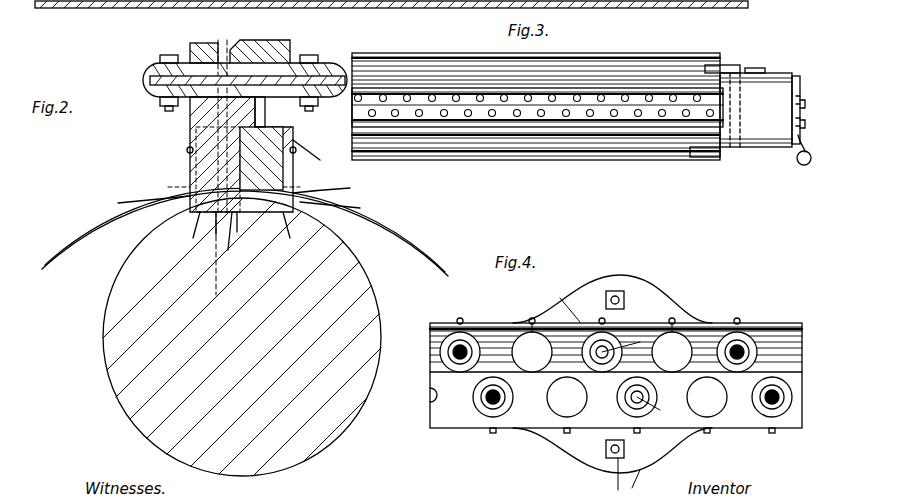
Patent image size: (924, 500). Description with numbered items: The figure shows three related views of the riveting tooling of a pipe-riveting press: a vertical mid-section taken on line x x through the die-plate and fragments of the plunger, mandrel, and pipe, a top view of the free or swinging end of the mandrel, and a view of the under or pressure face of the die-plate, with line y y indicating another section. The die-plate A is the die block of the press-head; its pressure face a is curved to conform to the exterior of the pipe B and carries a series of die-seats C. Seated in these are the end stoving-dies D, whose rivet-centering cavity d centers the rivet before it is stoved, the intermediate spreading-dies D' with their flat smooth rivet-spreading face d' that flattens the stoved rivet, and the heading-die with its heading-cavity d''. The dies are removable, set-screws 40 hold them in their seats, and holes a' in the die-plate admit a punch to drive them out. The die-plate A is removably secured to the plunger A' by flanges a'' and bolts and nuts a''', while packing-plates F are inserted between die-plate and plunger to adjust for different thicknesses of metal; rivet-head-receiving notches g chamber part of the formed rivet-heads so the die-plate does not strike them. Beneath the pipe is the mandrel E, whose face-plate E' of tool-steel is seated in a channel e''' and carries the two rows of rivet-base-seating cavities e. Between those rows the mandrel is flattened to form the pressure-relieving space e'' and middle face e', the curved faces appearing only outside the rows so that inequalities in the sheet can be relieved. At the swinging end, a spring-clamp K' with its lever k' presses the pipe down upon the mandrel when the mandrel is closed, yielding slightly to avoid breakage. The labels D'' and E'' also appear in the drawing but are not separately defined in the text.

In FIG. 2, the die-plate A is at (214, 155).
In FIG. 4, the die-plate A is at (603, 394).
In FIG. 2, the plunger A' is at (238, 42).
In FIG. 2, the pressure face a is at (218, 169).
In FIG. 4, the pressure face a is at (457, 442).
In FIG. 2, the holes a' is at (231, 144).
In FIG. 2, the flanges a'' is at (235, 106).
In FIG. 4, the flanges a'' is at (600, 377).
In FIG. 2, the bolts and nuts a''' is at (222, 79).
In FIG. 4, the bolts and nuts a''' is at (629, 356).
In FIG. 2, the pipe B is at (85, 238).
In FIG. 2, the die-seats C is at (314, 153).
In FIG. 2, the stoving-dies D is at (211, 157).
In FIG. 4, the stoving-dies D is at (596, 381).
In FIG. 4, the spreading-dies D' is at (611, 372).
In FIG. 4, the connecting bar D'' is at (604, 391).
In FIG. 2, the rivet-centering cavity d is at (231, 187).
In FIG. 4, the rivet-centering cavity d is at (595, 377).
In FIG. 4, the rivet-spreading face d' is at (619, 374).
In FIG. 4, the heading-cavity d'' is at (639, 379).
In FIG. 2, the mandrel E is at (242, 337).
In FIG. 3, the face-plate E' is at (536, 124).
In FIG. 2, the face-plate E' is at (99, 245).
In FIG. 3, the roll journal E'' is at (764, 119).
In FIG. 3, the rivet-base-seating cavities e is at (537, 141).
In FIG. 2, the rivet-base-seating cavities e is at (230, 227).
In FIG. 3, the middle face e' is at (585, 151).
In FIG. 2, the middle face e' is at (234, 242).
In FIG. 3, the pressure-relieving space e'' is at (628, 117).
In FIG. 2, the pressure-relieving space e'' is at (239, 233).
In FIG. 3, the channel e''' is at (632, 60).
In FIG. 2, the channel e''' is at (344, 210).
In FIG. 2, the packing-plates F is at (146, 78).
In FIG. 4, the rivet-head-receiving notches g is at (428, 395).
In FIG. 3, the spring-clamp K' is at (723, 93).
In FIG. 3, the lever k' is at (752, 117).
In FIG. 3, the section line x is at (437, 8).
In FIG. 2, the section line y is at (215, 154).
In FIG. 2, the set-screws 40 is at (233, 195).
In FIG. 4, the set-screws 40 is at (520, 325).